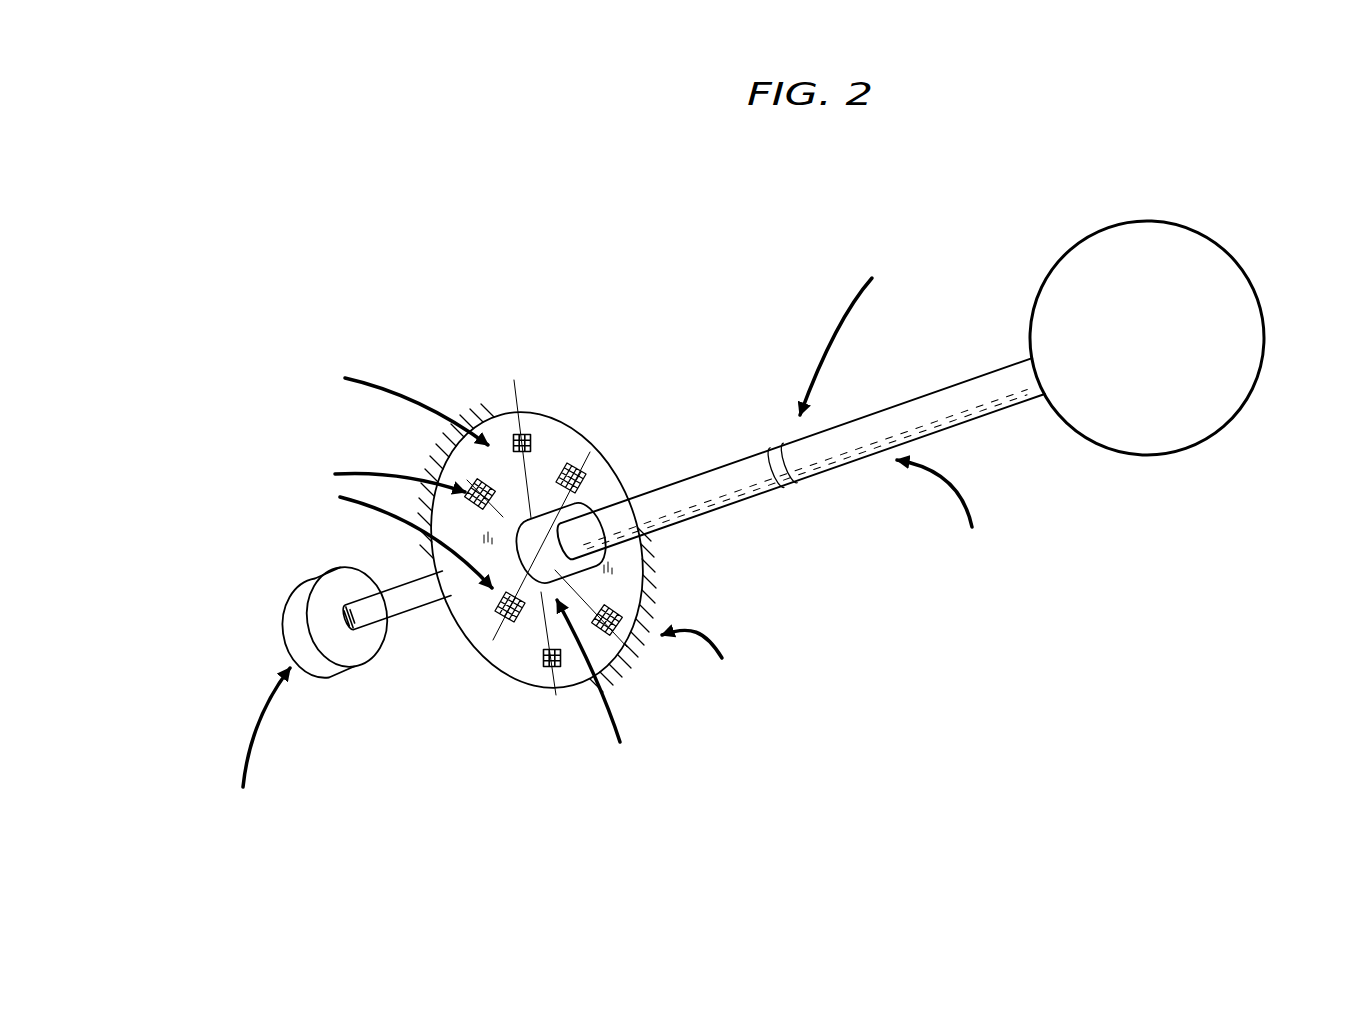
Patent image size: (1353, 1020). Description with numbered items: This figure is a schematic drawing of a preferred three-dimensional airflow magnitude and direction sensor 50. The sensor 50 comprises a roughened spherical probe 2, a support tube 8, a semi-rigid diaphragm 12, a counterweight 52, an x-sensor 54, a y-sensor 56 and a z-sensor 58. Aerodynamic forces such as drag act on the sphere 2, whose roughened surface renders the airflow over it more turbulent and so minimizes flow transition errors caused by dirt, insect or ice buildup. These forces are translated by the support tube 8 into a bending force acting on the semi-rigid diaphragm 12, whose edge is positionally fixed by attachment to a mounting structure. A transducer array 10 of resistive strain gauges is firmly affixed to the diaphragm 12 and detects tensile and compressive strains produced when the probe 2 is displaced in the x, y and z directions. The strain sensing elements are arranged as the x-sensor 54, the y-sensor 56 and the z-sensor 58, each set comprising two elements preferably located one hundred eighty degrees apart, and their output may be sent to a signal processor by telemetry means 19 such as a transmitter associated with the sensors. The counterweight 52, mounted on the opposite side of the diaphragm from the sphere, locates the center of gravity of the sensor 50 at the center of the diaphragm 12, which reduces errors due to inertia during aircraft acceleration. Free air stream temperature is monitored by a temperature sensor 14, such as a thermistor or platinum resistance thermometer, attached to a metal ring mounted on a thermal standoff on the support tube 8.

The spherical probe 2 is at (1215, 268).
The support tube 8 is at (932, 398).
The transducer array 10 is at (540, 400).
The semi-rigid diaphragm 12 is at (628, 603).
The temperature sensor 14 is at (790, 440).
The telemetry means 19 is at (538, 559).
The three-dimensional airflow magnitude and direction sensor 50 is at (730, 472).
The counterweight 52 is at (320, 598).
The x-sensor 54 is at (455, 531).
The y-sensor 56 is at (585, 470).
The z-sensor 58 is at (523, 432).